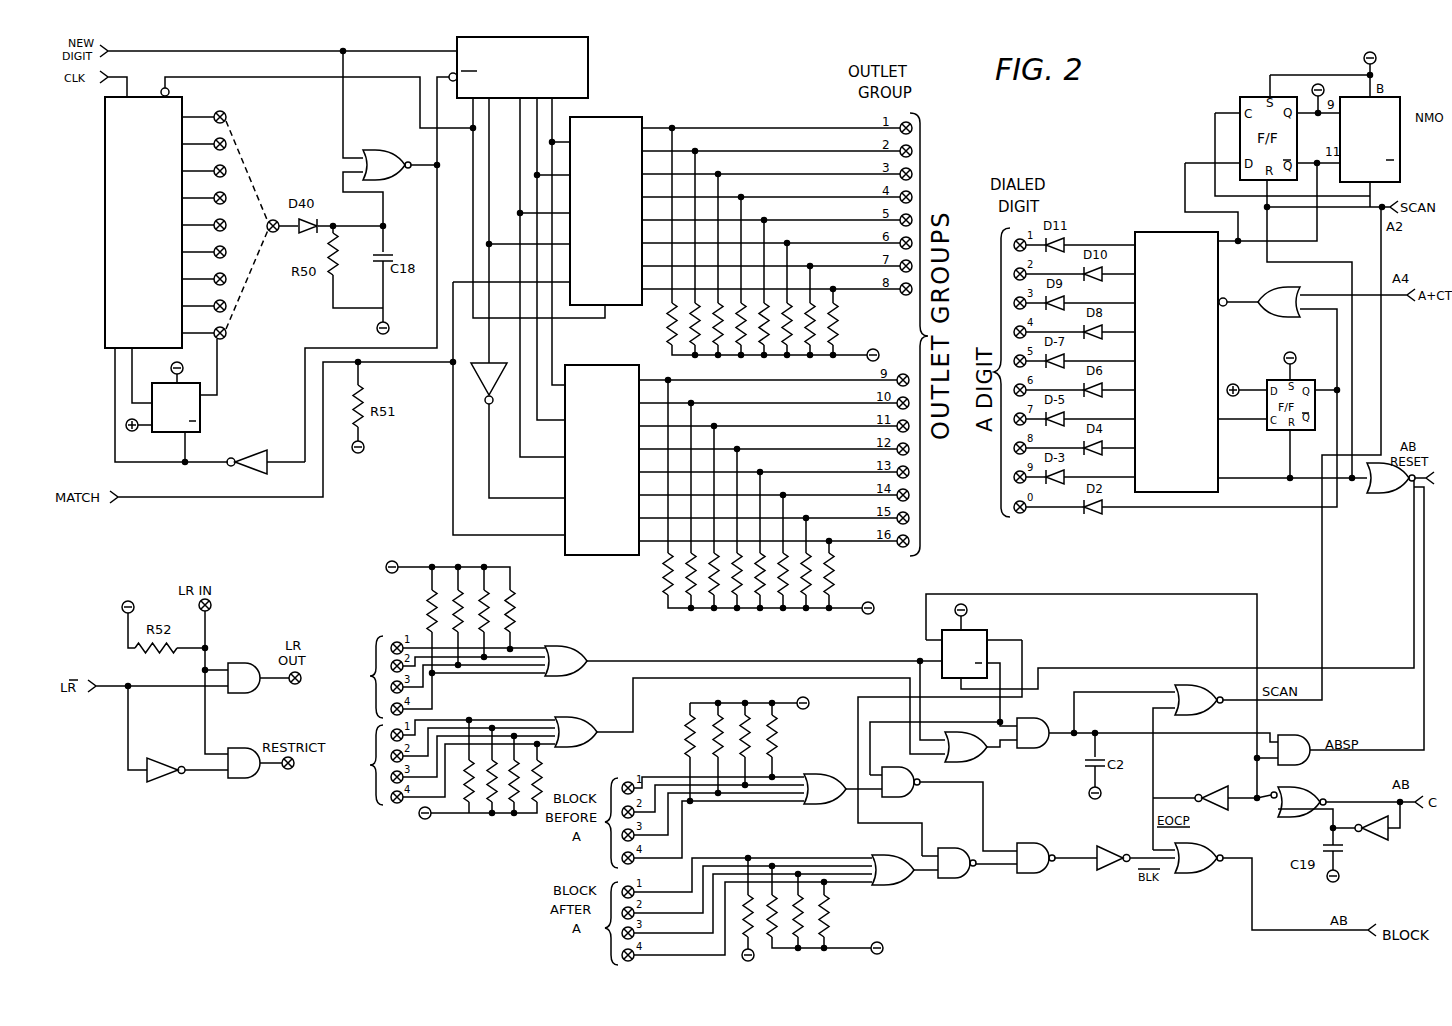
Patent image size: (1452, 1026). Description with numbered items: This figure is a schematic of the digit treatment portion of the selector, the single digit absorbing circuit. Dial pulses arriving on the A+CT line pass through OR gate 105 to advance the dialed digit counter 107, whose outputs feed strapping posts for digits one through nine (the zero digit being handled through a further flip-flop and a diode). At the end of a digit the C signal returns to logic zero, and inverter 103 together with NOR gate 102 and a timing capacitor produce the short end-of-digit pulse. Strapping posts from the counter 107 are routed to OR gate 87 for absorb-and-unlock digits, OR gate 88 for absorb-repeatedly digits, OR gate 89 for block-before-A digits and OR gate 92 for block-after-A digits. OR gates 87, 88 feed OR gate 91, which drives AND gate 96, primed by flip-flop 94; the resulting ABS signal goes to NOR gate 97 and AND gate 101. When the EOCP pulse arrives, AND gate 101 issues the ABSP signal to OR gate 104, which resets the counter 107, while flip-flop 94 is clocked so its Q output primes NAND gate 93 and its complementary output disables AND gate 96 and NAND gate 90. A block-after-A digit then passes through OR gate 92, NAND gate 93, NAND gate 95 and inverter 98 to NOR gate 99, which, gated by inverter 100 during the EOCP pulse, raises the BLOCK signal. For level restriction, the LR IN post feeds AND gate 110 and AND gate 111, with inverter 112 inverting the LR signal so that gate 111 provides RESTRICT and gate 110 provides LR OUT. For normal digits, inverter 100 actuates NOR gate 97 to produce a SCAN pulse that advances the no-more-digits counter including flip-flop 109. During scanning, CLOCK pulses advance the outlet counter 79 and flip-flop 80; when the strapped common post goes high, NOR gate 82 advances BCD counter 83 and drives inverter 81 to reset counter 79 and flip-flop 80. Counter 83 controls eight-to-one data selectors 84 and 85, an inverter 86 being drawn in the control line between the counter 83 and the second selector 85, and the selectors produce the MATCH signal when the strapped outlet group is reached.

The outlet counter 79 is at (105, 262).
The flip-flop 80 is at (200, 425).
The inverter 81 is at (259, 448).
The NOR gate 82 is at (397, 179).
The BCD counter 83 is at (588, 63).
The data selector 84 is at (628, 117).
The data selector 85 is at (602, 447).
The inverter 86 is at (480, 380).
The OR gate 87 is at (588, 652).
The OR gate 88 is at (606, 714).
The OR gate 89 is at (826, 778).
The NAND gate 90 is at (900, 797).
The OR gate 91 is at (985, 769).
The OR gate 92 is at (892, 884).
The NAND gate 93 is at (950, 878).
The flip-flop 94 is at (985, 632).
The NAND gate 95 is at (1035, 873).
The AND gate 96 is at (1030, 748).
The NOR gate 97 is at (1205, 686).
The inverter 98 is at (1098, 868).
The NOR gate 99 is at (1205, 873).
The inverter 100 is at (1212, 792).
The AND gate 101 is at (1292, 736).
The NOR gate 102 is at (1295, 818).
The inverter 103 is at (1372, 842).
The OR gate 104 is at (1390, 497).
The OR gate 105 is at (1280, 288).
The dialed digit counter 107 is at (1190, 377).
The flip-flop 109 is at (1400, 153).
The AND gate 110 is at (252, 692).
The AND gate 111 is at (252, 777).
The inverter 112 is at (165, 780).